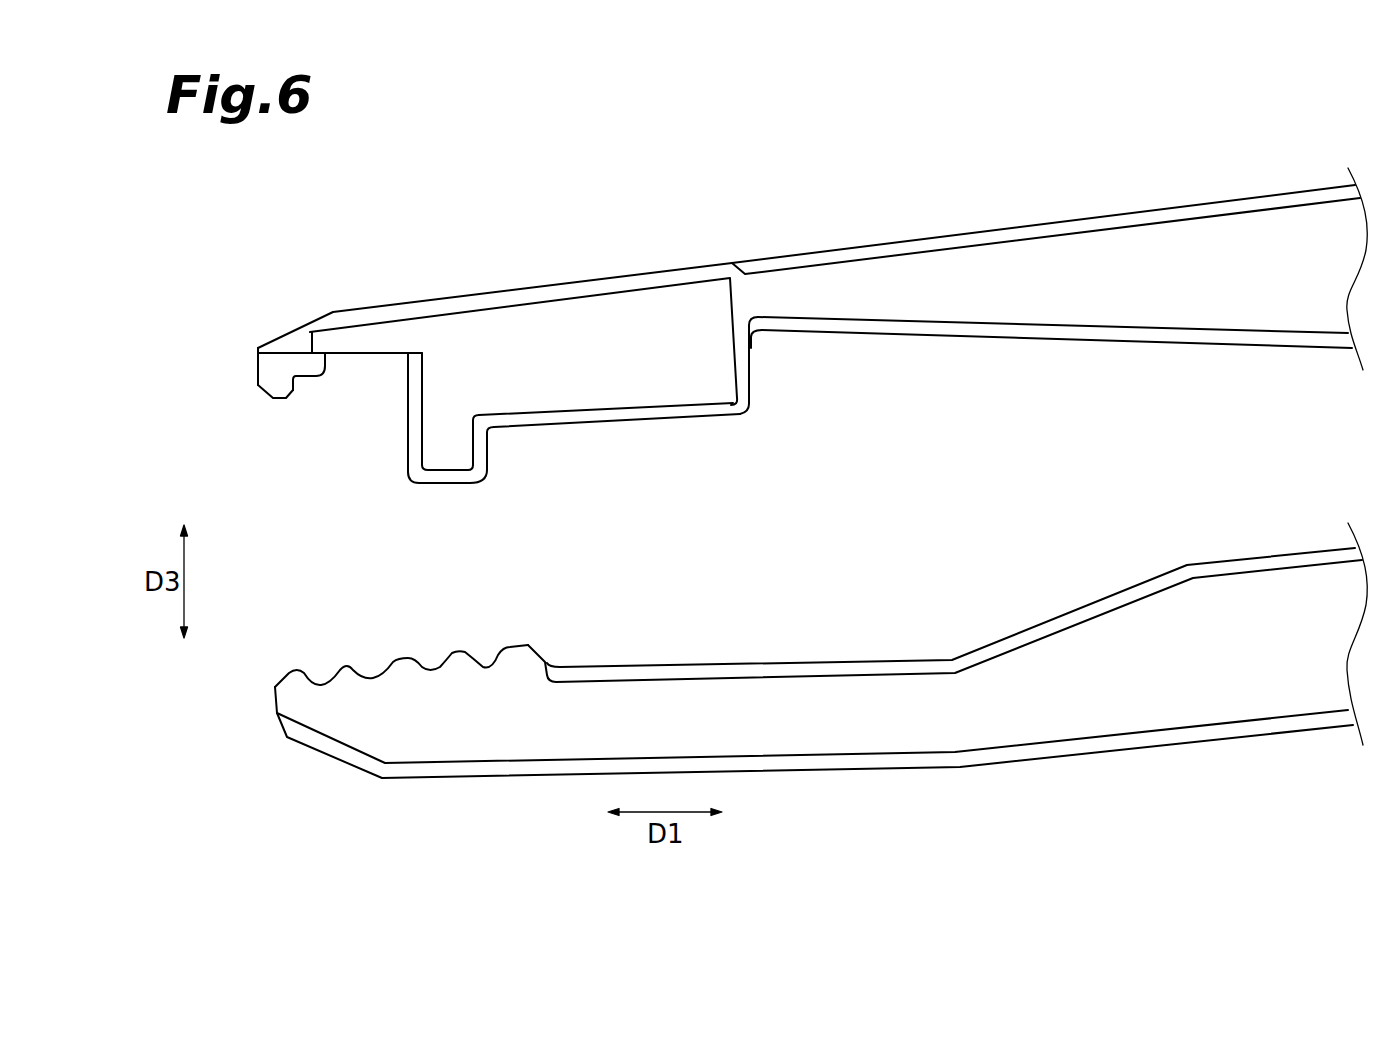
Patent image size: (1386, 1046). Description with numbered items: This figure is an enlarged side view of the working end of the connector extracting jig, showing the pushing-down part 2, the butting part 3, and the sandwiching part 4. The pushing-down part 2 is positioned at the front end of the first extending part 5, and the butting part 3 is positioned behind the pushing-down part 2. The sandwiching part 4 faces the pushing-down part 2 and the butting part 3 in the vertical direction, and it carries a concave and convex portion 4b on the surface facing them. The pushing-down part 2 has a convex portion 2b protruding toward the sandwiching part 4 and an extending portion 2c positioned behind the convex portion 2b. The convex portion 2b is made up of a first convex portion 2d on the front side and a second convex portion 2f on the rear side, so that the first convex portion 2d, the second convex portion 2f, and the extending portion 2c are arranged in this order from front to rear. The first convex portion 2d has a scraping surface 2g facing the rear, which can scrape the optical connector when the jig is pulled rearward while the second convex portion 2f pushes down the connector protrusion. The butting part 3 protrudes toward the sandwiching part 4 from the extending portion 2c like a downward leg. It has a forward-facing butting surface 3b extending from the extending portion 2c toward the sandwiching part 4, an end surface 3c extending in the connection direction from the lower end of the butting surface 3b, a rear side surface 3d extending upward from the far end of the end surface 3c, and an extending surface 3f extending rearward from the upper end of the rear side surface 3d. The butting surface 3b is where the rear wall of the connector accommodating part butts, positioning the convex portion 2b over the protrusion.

The pushing-down part 2 is at (436, 372).
The convex portion 2b is at (185, 350).
The extending portion 2c is at (376, 333).
The first convex portion 2d is at (278, 388).
The second convex portion 2f is at (308, 363).
The scraping surface 2g is at (295, 386).
The butting part 3 is at (551, 451).
The butting surface 3b is at (407, 388).
The end surface 3c is at (462, 488).
The rear side surface 3d is at (488, 449).
The extending surface 3f is at (641, 422).
The sandwiching part 4 is at (821, 675).
The concave and convex portion 4b is at (352, 670).
The first extending part 5 is at (1088, 247).